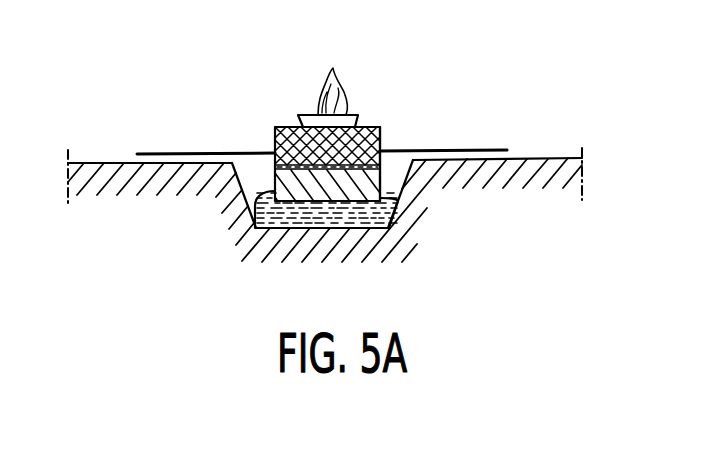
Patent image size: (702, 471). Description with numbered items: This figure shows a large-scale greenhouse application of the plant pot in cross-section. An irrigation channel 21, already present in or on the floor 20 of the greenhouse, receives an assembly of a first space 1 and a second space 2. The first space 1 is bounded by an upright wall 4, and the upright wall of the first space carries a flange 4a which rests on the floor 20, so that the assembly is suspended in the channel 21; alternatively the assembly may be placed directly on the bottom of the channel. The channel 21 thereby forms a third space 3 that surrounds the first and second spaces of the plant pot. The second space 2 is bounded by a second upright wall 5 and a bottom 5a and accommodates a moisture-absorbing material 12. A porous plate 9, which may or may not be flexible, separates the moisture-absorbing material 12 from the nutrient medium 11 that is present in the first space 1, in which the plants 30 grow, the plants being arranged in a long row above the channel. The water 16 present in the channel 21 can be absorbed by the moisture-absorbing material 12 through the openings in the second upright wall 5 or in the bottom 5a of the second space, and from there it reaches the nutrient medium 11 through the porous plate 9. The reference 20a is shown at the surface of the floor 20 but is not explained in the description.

The first space 1 is at (292, 135).
The second space 2 is at (330, 197).
The third space 3 is at (397, 173).
The upright wall 4 is at (273, 138).
The flange 4a is at (162, 153).
The second upright wall 5 is at (250, 195).
The bottom 5a is at (366, 230).
The porous plate 9 is at (357, 142).
The nutrient medium 11 is at (358, 138).
The moisture-absorbing material 12 is at (276, 230).
The water 16 is at (356, 228).
The floor 20 is at (540, 173).
The ground surface 20a is at (532, 158).
The irrigation channel 21 is at (232, 192).
The plants 30 is at (322, 85).